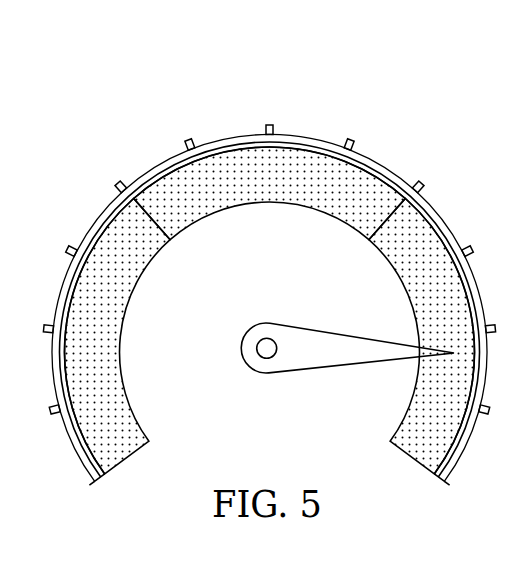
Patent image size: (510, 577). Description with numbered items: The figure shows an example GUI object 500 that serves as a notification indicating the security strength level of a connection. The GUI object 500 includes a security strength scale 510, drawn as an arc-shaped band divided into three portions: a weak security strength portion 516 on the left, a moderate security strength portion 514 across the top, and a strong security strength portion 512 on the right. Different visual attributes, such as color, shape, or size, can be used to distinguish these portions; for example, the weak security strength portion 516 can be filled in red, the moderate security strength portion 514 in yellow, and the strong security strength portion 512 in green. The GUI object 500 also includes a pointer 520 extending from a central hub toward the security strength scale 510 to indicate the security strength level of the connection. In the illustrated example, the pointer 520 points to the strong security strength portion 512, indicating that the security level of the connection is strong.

The GUI object 500 is at (127, 129).
The security strength scale 510 is at (92, 226).
The strong security strength portion 512 is at (420, 303).
The moderate security strength portion 514 is at (267, 190).
The weak security strength portion 516 is at (108, 348).
The pointer 520 is at (360, 370).